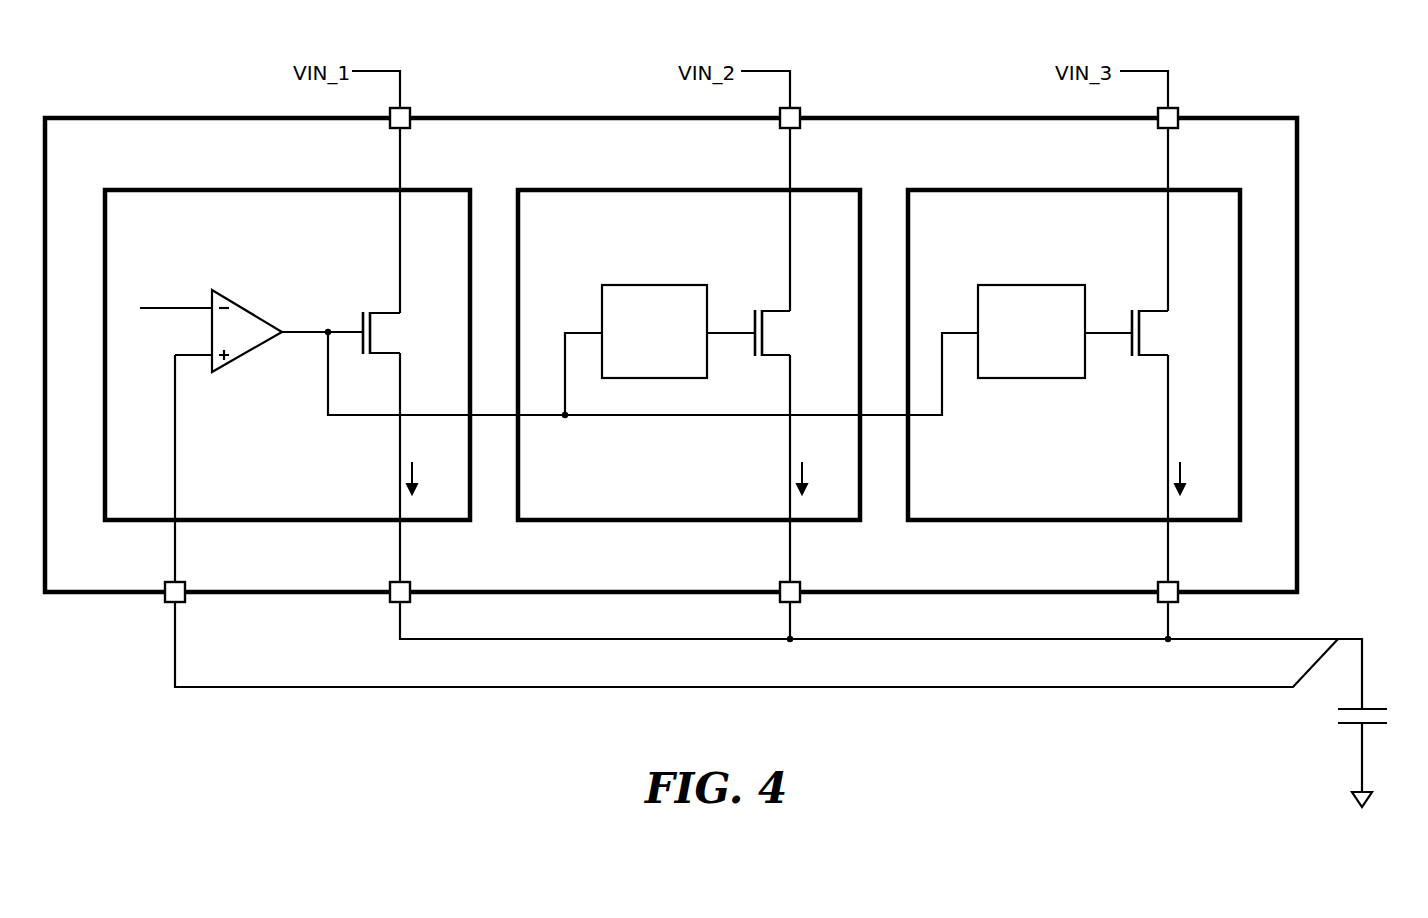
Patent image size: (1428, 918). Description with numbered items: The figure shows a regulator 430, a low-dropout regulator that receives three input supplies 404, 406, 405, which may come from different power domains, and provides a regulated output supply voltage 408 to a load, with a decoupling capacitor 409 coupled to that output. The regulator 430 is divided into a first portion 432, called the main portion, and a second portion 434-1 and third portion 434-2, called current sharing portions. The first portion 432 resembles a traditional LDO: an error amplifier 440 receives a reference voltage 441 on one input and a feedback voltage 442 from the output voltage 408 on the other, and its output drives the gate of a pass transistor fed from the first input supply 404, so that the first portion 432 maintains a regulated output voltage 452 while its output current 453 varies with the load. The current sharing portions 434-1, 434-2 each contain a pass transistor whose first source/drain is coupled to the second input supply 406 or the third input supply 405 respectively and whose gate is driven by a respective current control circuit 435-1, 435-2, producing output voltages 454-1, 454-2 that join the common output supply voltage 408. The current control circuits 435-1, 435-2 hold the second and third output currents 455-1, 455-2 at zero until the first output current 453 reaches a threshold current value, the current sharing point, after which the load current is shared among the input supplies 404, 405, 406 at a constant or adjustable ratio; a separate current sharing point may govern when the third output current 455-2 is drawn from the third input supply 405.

The regulator 430 is at (194, 130).
The first portion 432 is at (252, 200).
The second portion 434-1 is at (649, 200).
The third portion 434-2 is at (1027, 200).
The current control circuit 435-1 is at (654, 297).
The current control circuit 435-2 is at (1031, 297).
The error amplifier 440 is at (240, 350).
The reference voltage 441 is at (165, 310).
The feedback voltage 442 is at (175, 561).
The input supply 404 is at (400, 163).
The input supply 406 is at (790, 163).
The input supply 405 is at (1168, 161).
The regulated output voltage 452 is at (480, 562).
The output voltage 454-1 is at (848, 562).
The output voltage 454-2 is at (1213, 562).
The output current 453 is at (448, 466).
The output current 455-1 is at (838, 466).
The output current 455-2 is at (1215, 470).
The regulated output supply voltage 408 is at (1322, 607).
The capacitor 409 is at (1340, 715).